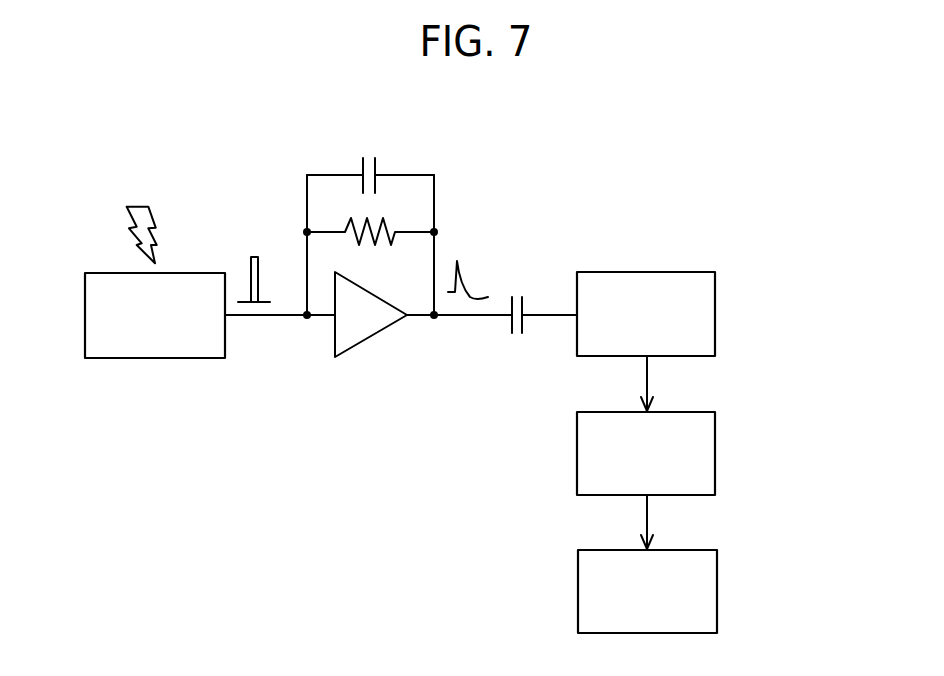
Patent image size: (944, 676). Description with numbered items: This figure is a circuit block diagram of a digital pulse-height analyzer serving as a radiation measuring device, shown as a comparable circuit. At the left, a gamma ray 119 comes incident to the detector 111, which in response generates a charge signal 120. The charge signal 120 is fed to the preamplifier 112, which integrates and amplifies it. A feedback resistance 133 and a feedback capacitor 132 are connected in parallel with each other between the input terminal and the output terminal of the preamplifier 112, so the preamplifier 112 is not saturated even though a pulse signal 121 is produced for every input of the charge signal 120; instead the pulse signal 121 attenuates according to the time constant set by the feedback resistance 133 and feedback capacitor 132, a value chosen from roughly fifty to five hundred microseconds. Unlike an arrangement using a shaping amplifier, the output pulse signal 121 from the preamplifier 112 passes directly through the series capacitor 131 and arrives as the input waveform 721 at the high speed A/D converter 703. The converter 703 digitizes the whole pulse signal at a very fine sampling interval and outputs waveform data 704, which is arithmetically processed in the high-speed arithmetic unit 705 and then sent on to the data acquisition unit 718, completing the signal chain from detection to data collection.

The detector 111 is at (173, 358).
The gamma ray 119 is at (141, 206).
The charge signal 120 is at (253, 255).
The preamplifier 112 is at (368, 341).
The feedback capacitor 132 is at (370, 154).
The feedback resistance 133 is at (387, 217).
The pulse signal 121 is at (468, 263).
The series capacitor 131 is at (517, 345).
The input waveform 721 is at (542, 307).
The high speed A/D converter 703 is at (717, 298).
The waveform data 704 is at (647, 378).
The high-speed arithmetic unit 705 is at (717, 438).
The data acquisition unit 718 is at (718, 578).